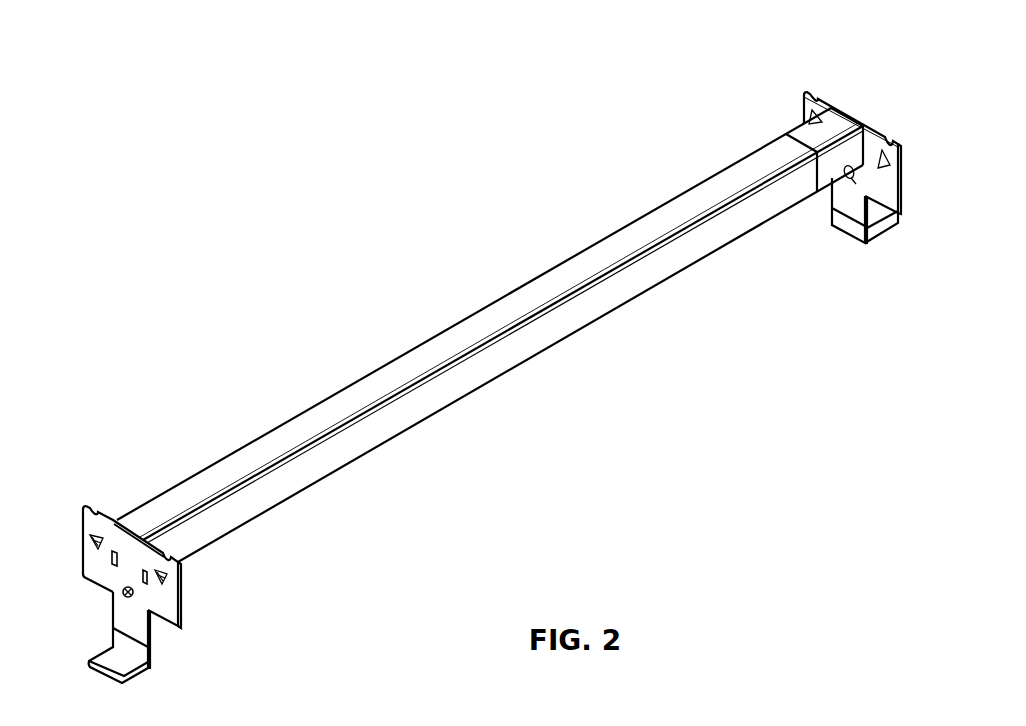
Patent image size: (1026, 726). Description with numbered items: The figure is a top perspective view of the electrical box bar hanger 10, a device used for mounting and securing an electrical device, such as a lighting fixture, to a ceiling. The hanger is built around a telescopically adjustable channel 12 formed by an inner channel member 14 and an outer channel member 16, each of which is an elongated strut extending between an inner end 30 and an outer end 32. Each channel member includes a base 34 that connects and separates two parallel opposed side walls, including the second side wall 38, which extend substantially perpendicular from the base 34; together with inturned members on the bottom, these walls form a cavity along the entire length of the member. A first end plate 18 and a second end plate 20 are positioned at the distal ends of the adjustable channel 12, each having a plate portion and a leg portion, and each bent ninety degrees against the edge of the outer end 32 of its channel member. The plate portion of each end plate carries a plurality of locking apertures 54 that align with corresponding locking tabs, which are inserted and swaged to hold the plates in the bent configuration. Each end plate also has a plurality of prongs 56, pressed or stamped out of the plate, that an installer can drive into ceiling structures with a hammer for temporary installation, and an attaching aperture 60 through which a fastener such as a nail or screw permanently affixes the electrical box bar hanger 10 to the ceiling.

The electrical box bar hanger 10 is at (457, 238).
The telescopically adjustable channel 12 is at (299, 407).
The inner channel member 14 is at (812, 136).
The outer channel member 16 is at (415, 370).
The first end plate 18 is at (818, 86).
The second end plate 20 is at (74, 496).
The inner end 30 is at (826, 167).
The outer end 32 is at (118, 523).
The base 34 is at (525, 303).
The second side wall 38 is at (497, 377).
The locking apertures 54 is at (112, 560).
The prongs 56 is at (90, 538).
The attaching aperture 60 is at (125, 596).